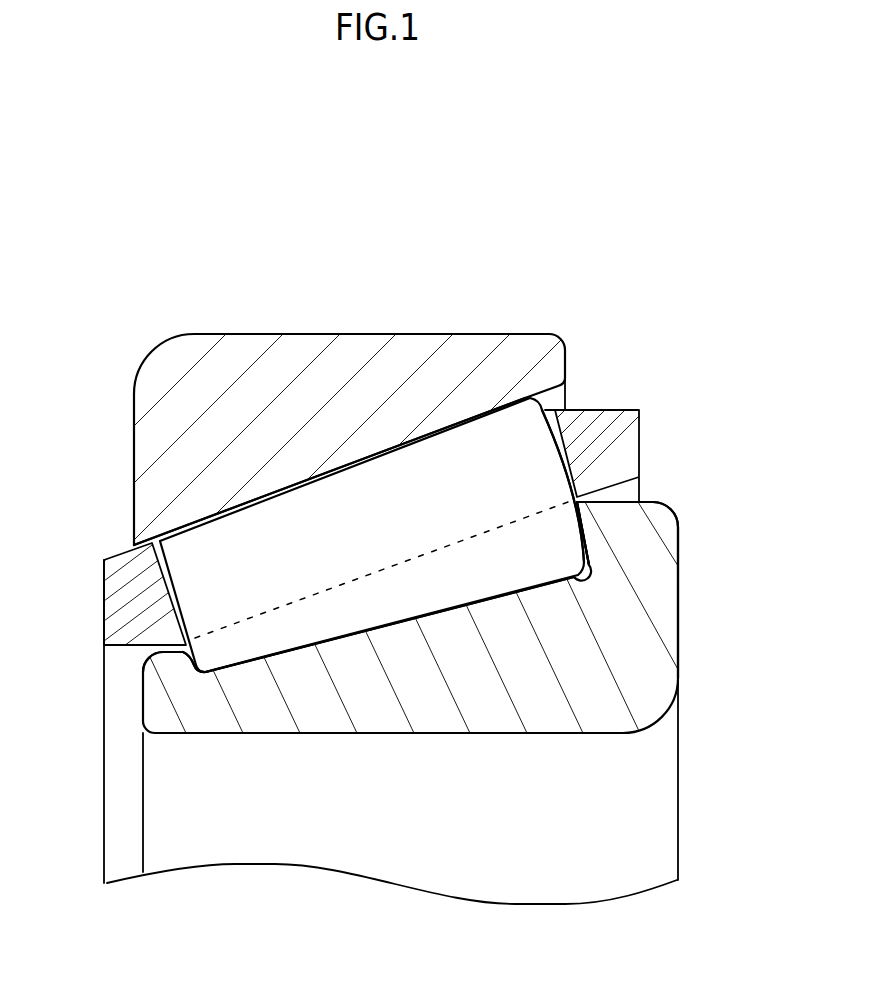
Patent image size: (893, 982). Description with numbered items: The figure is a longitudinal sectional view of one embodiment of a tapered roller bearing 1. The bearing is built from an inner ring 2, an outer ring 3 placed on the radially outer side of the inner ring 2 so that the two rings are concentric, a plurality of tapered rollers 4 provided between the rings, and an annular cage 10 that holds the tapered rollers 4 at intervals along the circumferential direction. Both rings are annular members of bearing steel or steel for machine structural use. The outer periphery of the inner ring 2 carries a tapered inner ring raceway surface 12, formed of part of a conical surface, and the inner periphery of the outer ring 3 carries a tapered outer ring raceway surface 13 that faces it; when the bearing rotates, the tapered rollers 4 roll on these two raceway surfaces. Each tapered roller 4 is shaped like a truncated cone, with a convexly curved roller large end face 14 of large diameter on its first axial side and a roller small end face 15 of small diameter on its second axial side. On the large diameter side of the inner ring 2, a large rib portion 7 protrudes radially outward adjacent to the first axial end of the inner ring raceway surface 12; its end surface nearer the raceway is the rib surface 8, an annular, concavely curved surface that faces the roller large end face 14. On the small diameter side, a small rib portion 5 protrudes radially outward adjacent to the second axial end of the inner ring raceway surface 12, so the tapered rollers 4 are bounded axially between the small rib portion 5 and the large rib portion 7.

The tapered roller bearing 1 is at (651, 277).
The inner ring 2 is at (452, 736).
The outer ring 3 is at (250, 333).
The tapered roller 4 is at (200, 518).
The small rib portion 5 is at (157, 682).
The large rib portion 7 is at (637, 543).
The rib surface 8 is at (583, 534).
The cage 10 is at (600, 438).
The inner ring raceway surface 12 is at (333, 637).
The outer ring raceway surface 13 is at (380, 462).
The roller large end face 14 is at (583, 545).
The roller small end face 15 is at (196, 670).